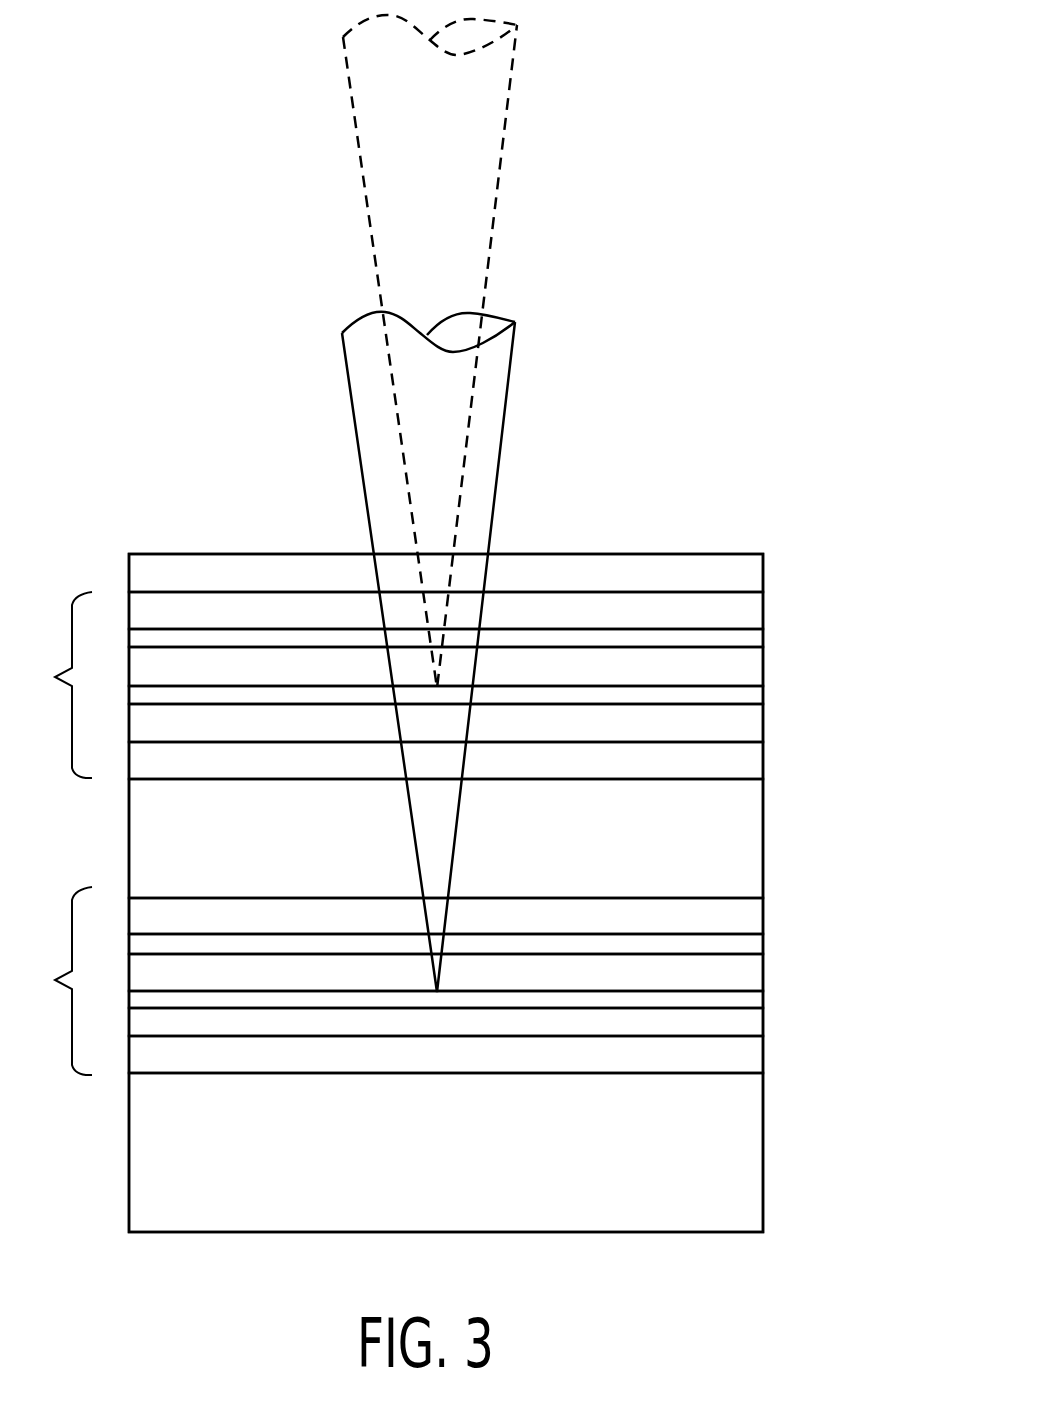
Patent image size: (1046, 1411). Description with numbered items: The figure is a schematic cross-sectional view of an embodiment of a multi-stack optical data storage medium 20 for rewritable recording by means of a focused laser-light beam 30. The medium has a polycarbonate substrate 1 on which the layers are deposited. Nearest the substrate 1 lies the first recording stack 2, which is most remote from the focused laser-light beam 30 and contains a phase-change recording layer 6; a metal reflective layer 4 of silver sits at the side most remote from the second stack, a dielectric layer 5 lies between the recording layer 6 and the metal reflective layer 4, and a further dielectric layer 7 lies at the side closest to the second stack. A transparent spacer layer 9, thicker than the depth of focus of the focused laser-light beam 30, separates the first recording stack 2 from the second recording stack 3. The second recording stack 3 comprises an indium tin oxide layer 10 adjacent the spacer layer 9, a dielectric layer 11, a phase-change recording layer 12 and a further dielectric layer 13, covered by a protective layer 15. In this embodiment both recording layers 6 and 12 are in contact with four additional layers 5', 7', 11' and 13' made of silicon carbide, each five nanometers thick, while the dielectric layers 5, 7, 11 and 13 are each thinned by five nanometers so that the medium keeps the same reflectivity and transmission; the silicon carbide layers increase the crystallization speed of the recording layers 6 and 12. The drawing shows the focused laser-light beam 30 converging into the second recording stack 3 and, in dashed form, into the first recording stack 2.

The substrate 1 is at (735, 1204).
The first recording stack 2 is at (40, 998).
The second recording stack 3 is at (40, 695).
The metal reflective layer 4 is at (732, 1055).
The dielectric layer 5 is at (494, 1032).
The additional SiC layer 5' is at (498, 1003).
The recording layer 6 is at (732, 978).
The further dielectric layer 7 is at (494, 914).
The additional SiC layer 7' is at (498, 937).
The transparent spacer layer 9 is at (732, 852).
The indium tin oxide layer 10 is at (732, 766).
The dielectric layer 11 is at (502, 726).
The additional SiC layer 11' is at (506, 698).
The recording layer 12 is at (732, 668).
The further dielectric layer 13 is at (502, 606).
The additional SiC layer 13' is at (506, 632).
The protective layer 15 is at (732, 569).
The multi-stack optical data storage medium 20 is at (665, 467).
The focused laser-light beam 30 is at (470, 126).